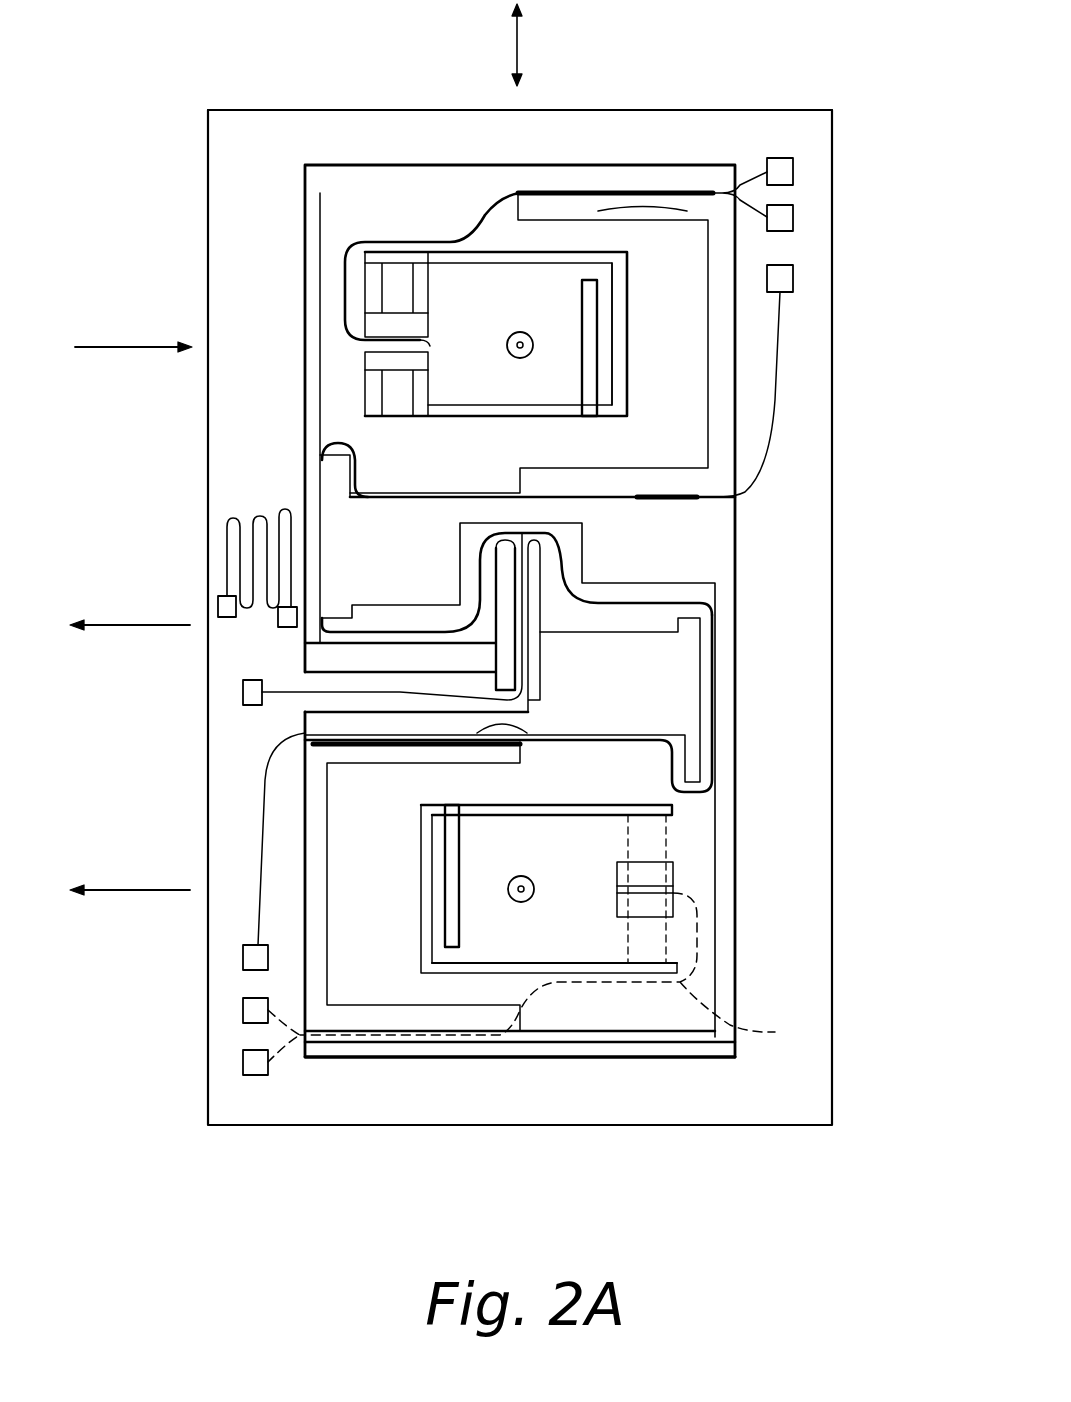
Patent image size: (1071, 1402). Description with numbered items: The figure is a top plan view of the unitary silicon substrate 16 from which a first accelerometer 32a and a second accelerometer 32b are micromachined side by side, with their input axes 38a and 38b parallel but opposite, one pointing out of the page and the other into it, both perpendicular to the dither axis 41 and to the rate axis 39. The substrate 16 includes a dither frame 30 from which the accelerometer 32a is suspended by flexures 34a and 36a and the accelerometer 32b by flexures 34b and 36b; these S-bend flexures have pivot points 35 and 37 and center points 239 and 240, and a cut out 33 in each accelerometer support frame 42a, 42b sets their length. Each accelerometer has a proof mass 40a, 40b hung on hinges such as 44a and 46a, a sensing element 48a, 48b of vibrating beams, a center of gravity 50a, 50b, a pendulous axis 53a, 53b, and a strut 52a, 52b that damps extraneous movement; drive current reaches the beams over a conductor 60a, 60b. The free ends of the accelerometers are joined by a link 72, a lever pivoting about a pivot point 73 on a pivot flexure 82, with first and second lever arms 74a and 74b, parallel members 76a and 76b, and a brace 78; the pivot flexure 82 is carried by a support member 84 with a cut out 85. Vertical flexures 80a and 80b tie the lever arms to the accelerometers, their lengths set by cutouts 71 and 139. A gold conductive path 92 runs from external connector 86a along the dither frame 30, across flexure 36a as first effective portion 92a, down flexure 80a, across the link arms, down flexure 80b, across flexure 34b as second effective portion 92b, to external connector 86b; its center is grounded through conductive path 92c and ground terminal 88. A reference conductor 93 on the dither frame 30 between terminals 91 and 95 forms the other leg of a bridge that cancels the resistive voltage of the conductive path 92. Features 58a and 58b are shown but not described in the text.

The substrate 16 is at (256, 106).
The dither frame 30 is at (783, 1105).
The first accelerometer 32a is at (312, 245).
The second accelerometer 32b is at (325, 854).
The cut out 33 is at (522, 203).
The flexure 34a is at (670, 203).
The flexure 34b is at (527, 735).
The pivot point 35 is at (705, 192).
The flexure 36a is at (700, 497).
The flexure 36b is at (462, 1045).
The pivot point 37 is at (735, 497).
The input axis 38a is at (518, 332).
The input axis 38b is at (518, 876).
The rate axis 39 is at (118, 622).
The proof mass 40a is at (487, 390).
The proof mass 40b is at (545, 830).
The dither axis 41 is at (514, 38).
The accelerometer support frame 42a is at (697, 292).
The accelerometer support frame 42b is at (633, 1030).
The hinge 44a is at (402, 282).
The hinge 46a is at (398, 403).
The sensing element 48a is at (422, 341).
The sensing element 48b is at (647, 880).
The center of gravity 50a is at (520, 358).
The center of gravity 50b is at (520, 902).
The strut 52a is at (605, 350).
The strut 52b is at (435, 880).
The pendulous axis 53a is at (112, 345).
The pendulous axis 53b is at (130, 893).
The chamber wall 58a is at (597, 262).
The chamber wall 58b is at (447, 962).
The conductor 60a is at (480, 210).
The conductor 60b is at (541, 977).
The cutout 71 is at (343, 618).
The link 72 is at (460, 515).
The pivot point 73 is at (497, 668).
The first lever arm 74a is at (398, 612).
The second lever arm 74b is at (605, 620).
The parallel member 76a is at (462, 540).
The parallel member 76b is at (583, 580).
The brace 78 is at (560, 535).
The flexure 80a is at (330, 582).
The flexure 80b is at (714, 722).
The pivot flexure 82 is at (523, 640).
The support member 84 is at (356, 668).
The cut out 85 is at (524, 690).
The external connector 86a is at (796, 282).
The external connector 86b is at (250, 960).
The ground terminal 88 is at (243, 692).
The terminal 91 is at (228, 618).
The conductive path 92 is at (790, 391).
The first effective portion 92a is at (570, 503).
The second effective portion 92b is at (360, 730).
The conductive path 92c is at (420, 692).
The reference conductor 93 is at (232, 520).
The terminal 95 is at (288, 628).
The cutout 139 is at (332, 470).
The center point 239 is at (645, 207).
The center point 240 is at (640, 497).